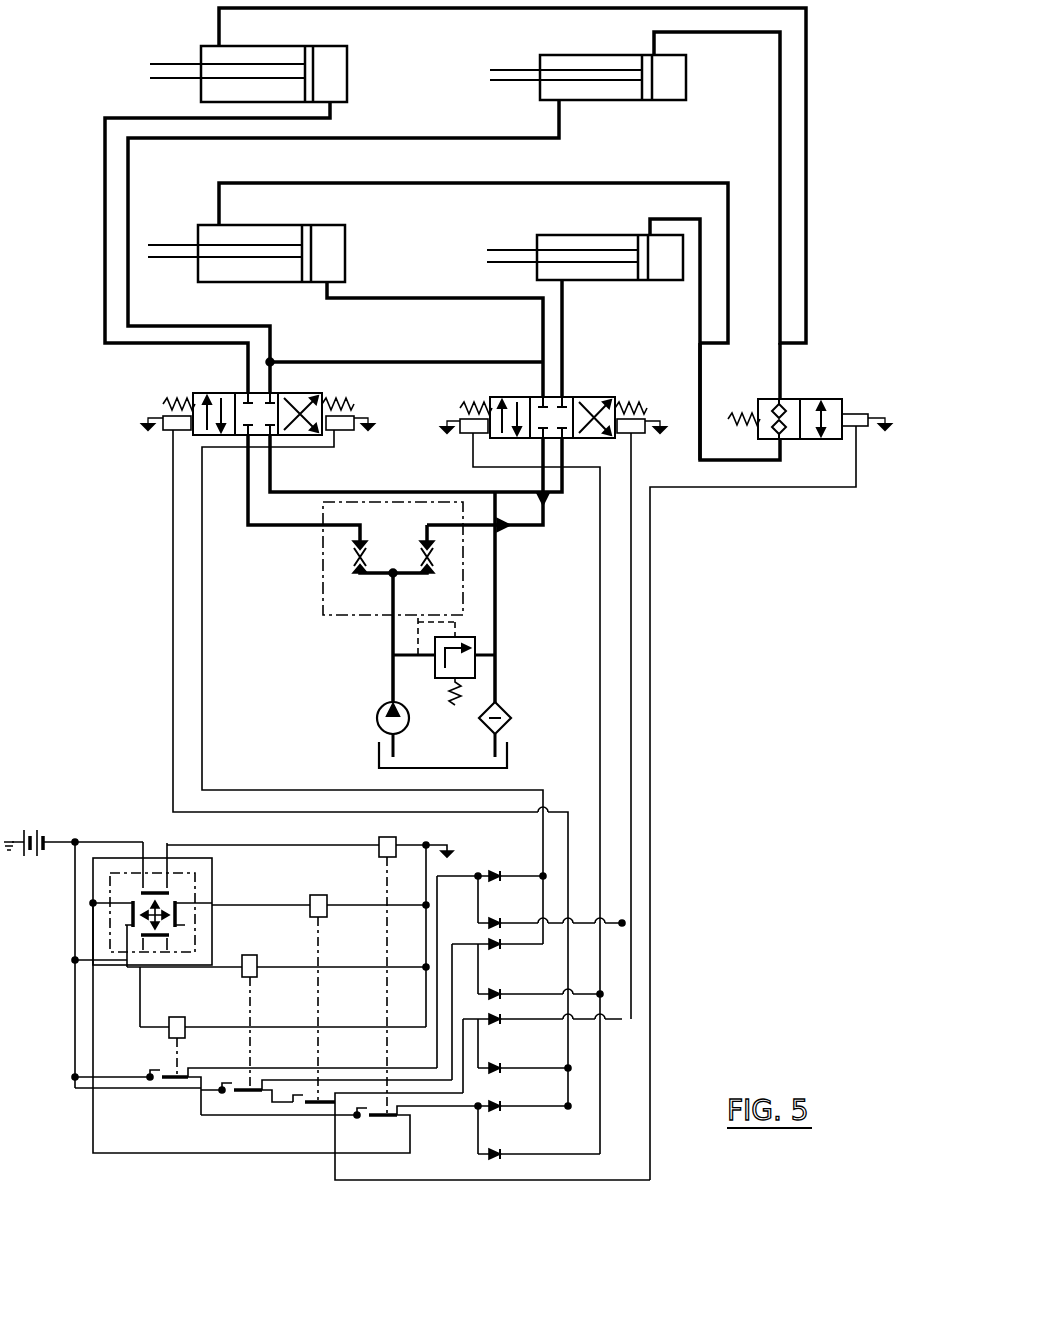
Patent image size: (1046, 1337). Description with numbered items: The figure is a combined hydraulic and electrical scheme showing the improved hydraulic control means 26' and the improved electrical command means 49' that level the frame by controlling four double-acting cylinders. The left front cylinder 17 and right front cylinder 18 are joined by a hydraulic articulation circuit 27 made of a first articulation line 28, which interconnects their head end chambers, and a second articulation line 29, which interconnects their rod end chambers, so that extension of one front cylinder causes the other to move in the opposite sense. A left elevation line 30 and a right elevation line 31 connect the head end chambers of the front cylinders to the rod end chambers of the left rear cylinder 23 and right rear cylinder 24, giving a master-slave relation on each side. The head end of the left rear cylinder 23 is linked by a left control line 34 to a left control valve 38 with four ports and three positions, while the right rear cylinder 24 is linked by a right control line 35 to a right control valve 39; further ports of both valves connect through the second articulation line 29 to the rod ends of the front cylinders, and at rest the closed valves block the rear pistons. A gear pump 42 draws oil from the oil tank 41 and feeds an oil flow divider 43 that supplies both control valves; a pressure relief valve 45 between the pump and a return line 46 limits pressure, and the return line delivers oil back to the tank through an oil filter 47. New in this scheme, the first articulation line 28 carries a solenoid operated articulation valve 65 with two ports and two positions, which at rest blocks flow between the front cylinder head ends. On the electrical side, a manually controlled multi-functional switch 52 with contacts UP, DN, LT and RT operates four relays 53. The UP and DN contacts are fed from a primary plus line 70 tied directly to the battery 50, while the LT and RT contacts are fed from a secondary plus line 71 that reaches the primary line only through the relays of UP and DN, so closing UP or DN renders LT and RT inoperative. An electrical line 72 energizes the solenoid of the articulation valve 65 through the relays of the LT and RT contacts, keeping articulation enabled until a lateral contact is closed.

The left front cylinder 17 is at (605, 100).
The right front cylinder 18 is at (605, 282).
The left rear cylinder 23 is at (348, 78).
The right rear cylinder 24 is at (346, 250).
The hydraulic control means 26' is at (463, 394).
The hydraulic articulation circuit 27 is at (830, 127).
The first articulation line 28 is at (778, 366).
The second articulation line 29 is at (455, 140).
The left elevation line 30 is at (436, 12).
The right elevation line 31 is at (437, 185).
The left control line 34 is at (100, 262).
The right control line 35 is at (440, 300).
The left control valve 38 is at (210, 392).
The right control valve 39 is at (592, 396).
The oil tank 41 is at (378, 752).
The gear pump 42 is at (377, 718).
The oil flow divider 43 is at (322, 577).
The pressure relief valve 45 is at (435, 670).
The return line 46 is at (497, 590).
The oil filter 47 is at (512, 715).
The electrical command means 49' is at (430, 803).
The battery 50 is at (33, 830).
The multi-functional switch 52 is at (110, 928).
The relays 53 is at (396, 838).
The articulation valve 65 is at (826, 398).
The primary plus line 70 is at (63, 840).
The secondary plus line 71 is at (90, 1112).
The electrical line 72 is at (650, 1047).